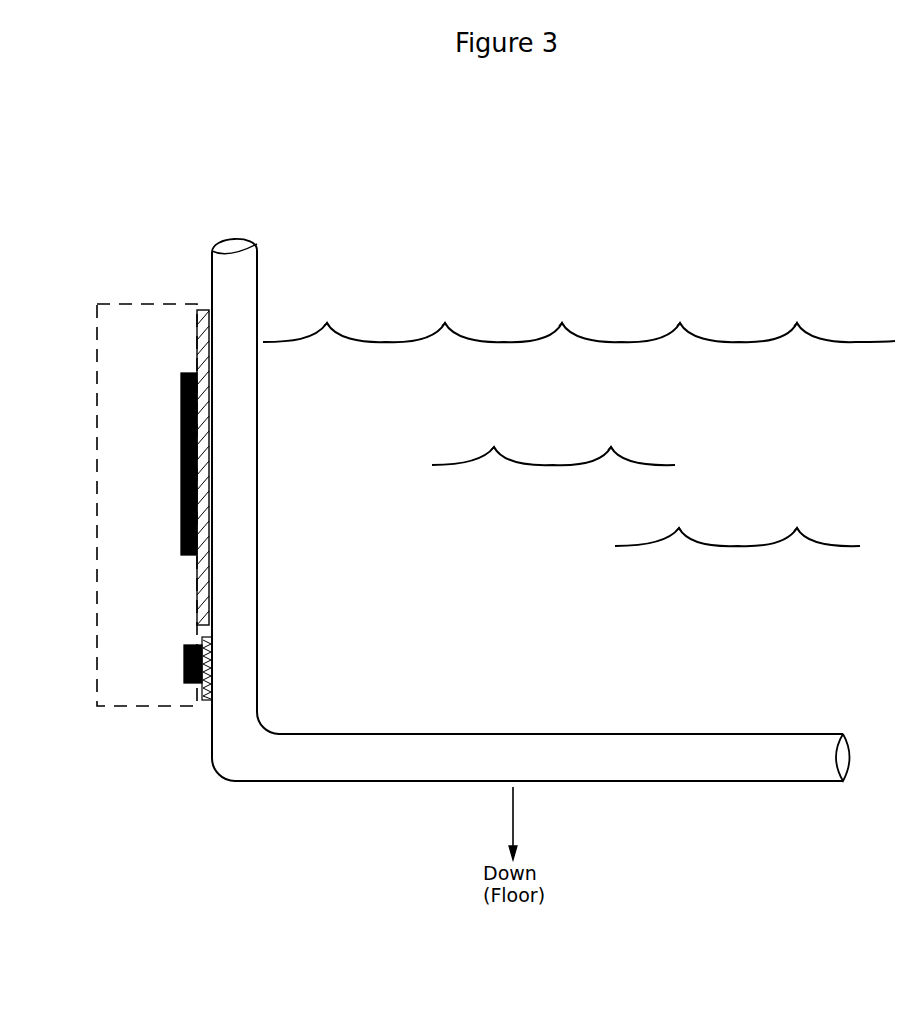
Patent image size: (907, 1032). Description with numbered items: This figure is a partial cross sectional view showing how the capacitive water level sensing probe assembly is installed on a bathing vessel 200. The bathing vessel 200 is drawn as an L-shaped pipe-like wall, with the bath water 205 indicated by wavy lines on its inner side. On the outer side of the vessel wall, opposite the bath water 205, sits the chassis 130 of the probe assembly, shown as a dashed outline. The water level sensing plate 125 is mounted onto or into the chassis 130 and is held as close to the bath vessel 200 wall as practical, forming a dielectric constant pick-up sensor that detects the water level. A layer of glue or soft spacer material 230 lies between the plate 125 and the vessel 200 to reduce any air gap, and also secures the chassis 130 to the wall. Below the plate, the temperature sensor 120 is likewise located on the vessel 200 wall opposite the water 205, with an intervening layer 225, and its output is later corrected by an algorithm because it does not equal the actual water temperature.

The chassis 130 is at (117, 300).
The glue or soft spacer material 230 is at (208, 308).
The bathing vessel 200 is at (258, 270).
The bath water 205 is at (462, 327).
The water level sensing plate 125 is at (182, 443).
The coupling layer 225 is at (205, 640).
The temperature sensor 120 is at (184, 678).